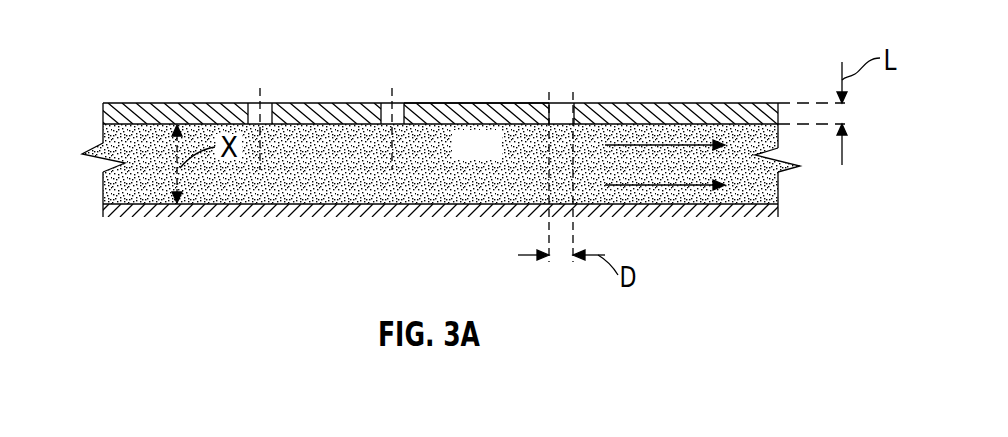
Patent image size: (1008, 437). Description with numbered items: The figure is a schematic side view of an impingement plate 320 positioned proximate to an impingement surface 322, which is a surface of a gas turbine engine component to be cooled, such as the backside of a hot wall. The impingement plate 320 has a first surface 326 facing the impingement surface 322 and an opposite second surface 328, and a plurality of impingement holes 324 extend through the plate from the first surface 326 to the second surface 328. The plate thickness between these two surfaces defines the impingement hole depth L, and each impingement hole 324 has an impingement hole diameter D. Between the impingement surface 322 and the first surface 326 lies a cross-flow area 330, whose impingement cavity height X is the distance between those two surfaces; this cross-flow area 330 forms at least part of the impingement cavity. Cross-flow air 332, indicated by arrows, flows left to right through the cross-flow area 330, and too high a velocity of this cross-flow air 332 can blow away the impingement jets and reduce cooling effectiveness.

The impingement plate 320 is at (688, 108).
The impingement surface 322 is at (305, 212).
The impingement holes 324 is at (254, 93).
The first surface 326 is at (428, 124).
The second surface 328 is at (484, 103).
The cross-flow area 330 is at (132, 154).
The cross-flow air 332 is at (687, 173).